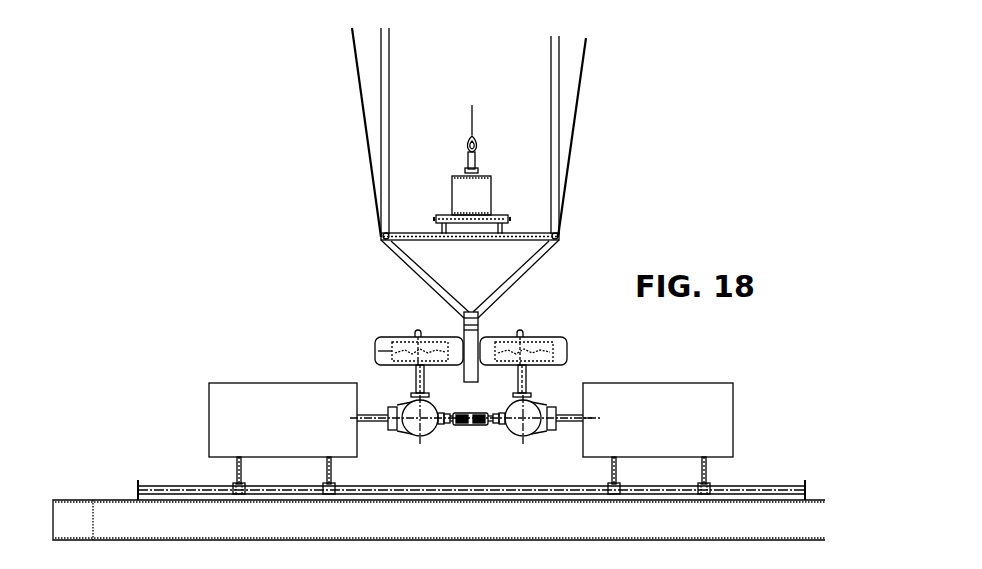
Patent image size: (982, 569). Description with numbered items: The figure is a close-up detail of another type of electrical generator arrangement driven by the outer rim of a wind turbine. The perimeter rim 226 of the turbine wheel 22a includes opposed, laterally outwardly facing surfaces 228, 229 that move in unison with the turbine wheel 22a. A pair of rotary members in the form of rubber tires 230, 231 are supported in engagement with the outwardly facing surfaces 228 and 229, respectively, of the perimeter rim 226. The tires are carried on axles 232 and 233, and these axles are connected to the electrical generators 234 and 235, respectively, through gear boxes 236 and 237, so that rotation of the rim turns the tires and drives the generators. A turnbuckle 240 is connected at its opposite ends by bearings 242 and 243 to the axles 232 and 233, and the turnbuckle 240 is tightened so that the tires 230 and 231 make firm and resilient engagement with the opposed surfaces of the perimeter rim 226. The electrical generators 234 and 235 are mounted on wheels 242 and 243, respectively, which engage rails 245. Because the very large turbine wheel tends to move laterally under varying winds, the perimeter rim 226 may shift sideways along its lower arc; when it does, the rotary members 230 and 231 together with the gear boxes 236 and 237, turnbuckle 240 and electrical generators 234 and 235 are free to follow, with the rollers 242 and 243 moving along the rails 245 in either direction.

The turbine wheel 22a is at (568, 178).
The perimeter rim 226 is at (479, 320).
The outwardly facing surface 228 is at (479, 338).
The outwardly facing surface 229 is at (419, 336).
The rubber tire 230 is at (566, 338).
The rubber tire 231 is at (382, 350).
The axle 232 is at (531, 382).
The axle 233 is at (414, 381).
The electrical generator 234 is at (644, 438).
The electrical generator 235 is at (298, 438).
The gear box 236 is at (518, 432).
The gear box 237 is at (410, 432).
The turnbuckle 240 is at (475, 426).
The bearing 242 is at (502, 416).
The bearing 243 is at (441, 416).
The rails 245 is at (528, 487).